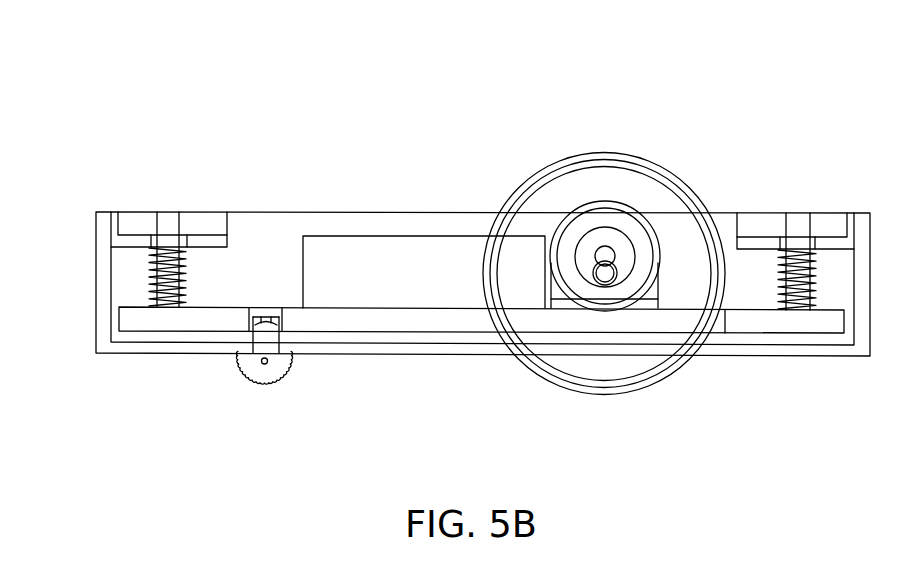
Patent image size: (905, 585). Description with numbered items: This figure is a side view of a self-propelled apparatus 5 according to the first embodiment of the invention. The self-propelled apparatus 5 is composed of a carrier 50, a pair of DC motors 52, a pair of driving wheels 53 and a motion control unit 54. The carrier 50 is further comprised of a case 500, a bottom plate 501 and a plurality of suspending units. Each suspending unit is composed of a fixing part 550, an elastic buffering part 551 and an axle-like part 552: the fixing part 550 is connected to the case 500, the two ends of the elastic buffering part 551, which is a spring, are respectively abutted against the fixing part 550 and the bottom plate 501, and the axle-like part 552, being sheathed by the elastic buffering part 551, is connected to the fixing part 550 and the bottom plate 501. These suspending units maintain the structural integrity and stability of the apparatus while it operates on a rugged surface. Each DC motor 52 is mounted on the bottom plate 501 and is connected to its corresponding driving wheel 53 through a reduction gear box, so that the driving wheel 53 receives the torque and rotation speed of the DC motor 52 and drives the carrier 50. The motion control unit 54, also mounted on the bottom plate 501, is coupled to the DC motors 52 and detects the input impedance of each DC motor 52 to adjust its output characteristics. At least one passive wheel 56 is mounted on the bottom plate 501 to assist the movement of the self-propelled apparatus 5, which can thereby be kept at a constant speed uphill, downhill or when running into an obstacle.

The self-propelled apparatus 5 is at (99, 80).
The carrier 50 is at (80, 212).
The case 500 is at (97, 320).
The bottom plate 501 is at (328, 320).
The DC motor 52 is at (625, 258).
The driving wheel 53 is at (637, 165).
The motion control unit 54 is at (343, 258).
The fixing part 550 is at (202, 238).
The elastic buffering part 551 is at (178, 282).
The axle-like part 552 is at (169, 222).
The passive wheel 56 is at (262, 372).